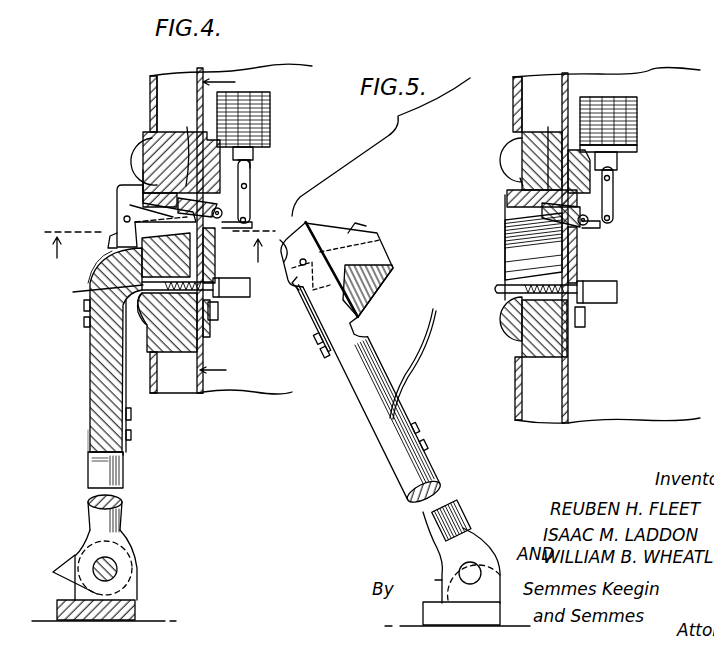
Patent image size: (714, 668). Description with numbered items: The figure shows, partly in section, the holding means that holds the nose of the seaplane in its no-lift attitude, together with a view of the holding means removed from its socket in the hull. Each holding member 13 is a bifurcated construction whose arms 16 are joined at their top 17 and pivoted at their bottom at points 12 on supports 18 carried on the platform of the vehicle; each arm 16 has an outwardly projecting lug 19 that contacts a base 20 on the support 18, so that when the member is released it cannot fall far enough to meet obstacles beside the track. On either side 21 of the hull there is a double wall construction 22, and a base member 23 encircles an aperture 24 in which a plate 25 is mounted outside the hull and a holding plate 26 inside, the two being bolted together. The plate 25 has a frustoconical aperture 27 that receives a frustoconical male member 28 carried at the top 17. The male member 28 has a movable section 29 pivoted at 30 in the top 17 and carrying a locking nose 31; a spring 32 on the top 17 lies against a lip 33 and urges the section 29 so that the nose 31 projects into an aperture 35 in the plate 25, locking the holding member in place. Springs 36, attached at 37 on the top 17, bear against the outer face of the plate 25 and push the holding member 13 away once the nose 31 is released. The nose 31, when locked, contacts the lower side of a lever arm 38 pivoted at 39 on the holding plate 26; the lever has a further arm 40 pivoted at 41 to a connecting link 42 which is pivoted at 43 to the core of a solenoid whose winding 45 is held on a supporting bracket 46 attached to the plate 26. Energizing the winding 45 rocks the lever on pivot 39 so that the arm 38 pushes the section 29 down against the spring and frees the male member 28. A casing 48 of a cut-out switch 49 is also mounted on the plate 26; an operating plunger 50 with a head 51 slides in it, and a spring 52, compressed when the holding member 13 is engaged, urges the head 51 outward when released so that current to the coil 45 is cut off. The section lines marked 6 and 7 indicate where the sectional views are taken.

In FIG. 4, the section line 6- 6 is at (160, 253).
In FIG. 4, the section line 7- 7 is at (225, 226).
In FIG. 4, the pivot point 12 is at (113, 563).
In FIG. 5, the pivot point 12 is at (459, 570).
In FIG. 4, the holding member 13 is at (80, 451).
In FIG. 5, the holding member 13 is at (375, 462).
In FIG. 4, the arm 16 is at (97, 473).
In FIG. 5, the arm 16 is at (370, 410).
In FIG. 4, the top 17 is at (90, 362).
In FIG. 5, the top 17 is at (353, 317).
In FIG. 4, the support 18 is at (128, 593).
In FIG. 5, the support 18 is at (476, 553).
In FIG. 4, the lug 19 is at (53, 572).
In FIG. 5, the lug 19 is at (435, 581).
In FIG. 4, the base 20 is at (60, 602).
In FIG. 5, the base 20 is at (432, 606).
In FIG. 4, the side of the hull 21 is at (141, 94).
In FIG. 4, the double wall construction 22 is at (197, 92).
In FIG. 4, the base member 23 is at (143, 140).
In FIG. 4, the aperture 24 is at (153, 167).
In FIG. 4, the plate 25 is at (143, 178).
In FIG. 4, the holding plate 26 is at (212, 330).
In FIG. 4, the frustoconical aperture 27 is at (187, 263).
In FIG. 4, the frustoconical male member 28 is at (205, 245).
In FIG. 5, the frustoconical male member 28 is at (388, 279).
In FIG. 4, the movable section 29 is at (130, 205).
In FIG. 5, the movable section 29 is at (386, 242).
In FIG. 4, the pivot 30 is at (123, 219).
In FIG. 5, the pivot 30 is at (306, 258).
In FIG. 4, the locking nose 31 is at (156, 216).
In FIG. 5, the locking nose 31 is at (360, 224).
In FIG. 4, the spring 32 is at (95, 294).
In FIG. 5, the spring 32 is at (311, 320).
In FIG. 4, the lip 33 is at (109, 243).
In FIG. 5, the lip 33 is at (294, 284).
In FIG. 4, the aperture 35 is at (183, 147).
In FIG. 4, the spring 36 is at (130, 400).
In FIG. 5, the spring 36 is at (422, 348).
In FIG. 4, the attachment point 37 is at (131, 437).
In FIG. 5, the attachment point 37 is at (422, 442).
In FIG. 4, the lever arm 38 is at (207, 202).
In FIG. 4, the pivot 39 is at (219, 219).
In FIG. 4, the arm 40 is at (253, 227).
In FIG. 4, the pivot 41 is at (247, 220).
In FIG. 4, the connecting link 42 is at (251, 200).
In FIG. 4, the pivot 43 is at (248, 186).
In FIG. 4, the solenoid winding 45 is at (272, 118).
In FIG. 4, the supporting bracket 46 is at (254, 160).
In FIG. 4, the casing 48 is at (243, 298).
In FIG. 4, the cut-out switch 49 is at (252, 167).
In FIG. 4, the operating plunger 50 is at (207, 278).
In FIG. 4, the head 51 is at (88, 303).
In FIG. 4, the spring 52 is at (182, 296).